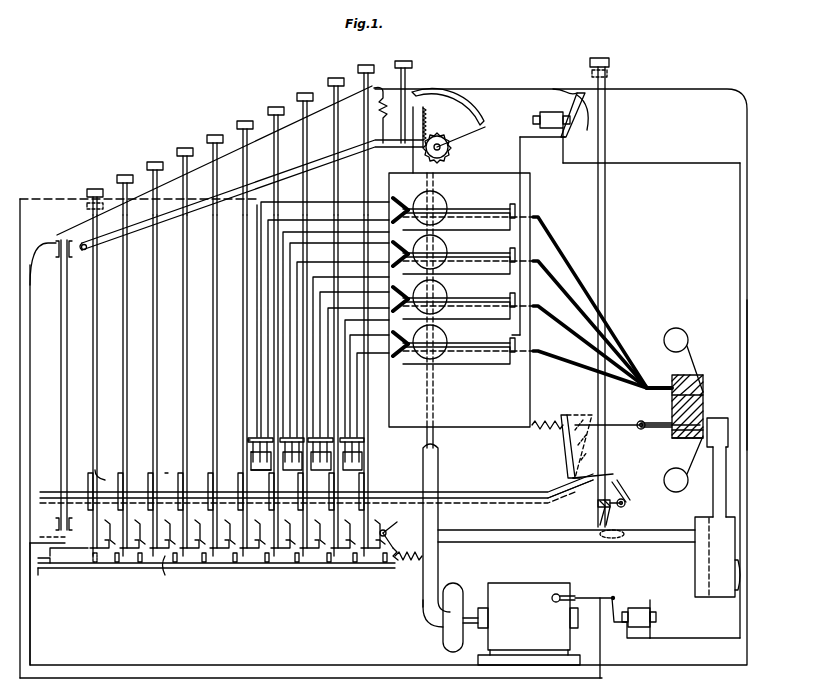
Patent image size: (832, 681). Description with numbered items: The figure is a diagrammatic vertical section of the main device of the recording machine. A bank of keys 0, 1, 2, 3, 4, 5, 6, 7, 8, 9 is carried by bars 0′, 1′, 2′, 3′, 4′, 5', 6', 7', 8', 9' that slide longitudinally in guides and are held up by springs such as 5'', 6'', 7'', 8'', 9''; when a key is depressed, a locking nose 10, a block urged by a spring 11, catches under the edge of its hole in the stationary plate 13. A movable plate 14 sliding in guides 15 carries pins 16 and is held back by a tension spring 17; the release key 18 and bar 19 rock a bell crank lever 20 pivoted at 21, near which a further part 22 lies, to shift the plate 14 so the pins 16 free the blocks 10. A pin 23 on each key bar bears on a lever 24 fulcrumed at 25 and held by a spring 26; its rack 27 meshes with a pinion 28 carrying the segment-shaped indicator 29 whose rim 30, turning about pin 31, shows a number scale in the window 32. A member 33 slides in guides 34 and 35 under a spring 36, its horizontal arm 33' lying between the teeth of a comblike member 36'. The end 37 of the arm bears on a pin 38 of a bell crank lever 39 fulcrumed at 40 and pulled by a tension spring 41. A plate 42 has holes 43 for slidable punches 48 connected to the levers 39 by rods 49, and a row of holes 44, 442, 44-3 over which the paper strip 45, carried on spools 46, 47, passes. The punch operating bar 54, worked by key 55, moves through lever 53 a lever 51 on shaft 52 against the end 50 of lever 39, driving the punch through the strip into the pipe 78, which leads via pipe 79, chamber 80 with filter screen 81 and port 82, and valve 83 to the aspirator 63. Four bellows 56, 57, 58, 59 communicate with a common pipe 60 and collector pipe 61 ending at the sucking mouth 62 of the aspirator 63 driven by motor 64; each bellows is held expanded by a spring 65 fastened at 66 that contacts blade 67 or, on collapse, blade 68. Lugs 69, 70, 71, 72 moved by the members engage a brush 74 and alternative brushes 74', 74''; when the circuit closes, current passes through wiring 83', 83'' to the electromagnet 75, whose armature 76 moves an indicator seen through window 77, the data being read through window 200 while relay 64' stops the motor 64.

The key 0 is at (94, 189).
The key 1 is at (124, 175).
The key 2 is at (154, 162).
The key 3 is at (184, 148).
The key 4 is at (214, 135).
The key 5 is at (245, 158).
The key 6 is at (276, 151).
The key 7 is at (305, 144).
The key 8 is at (336, 137).
The key 9 is at (366, 130).
The key bar 0′ is at (99, 362).
The key bar 1′ is at (129, 360).
The key bar 2′ is at (159, 360).
The key bar 3′ is at (189, 358).
The key bar 4′ is at (219, 358).
The key bar 5' is at (240, 380).
The key bar 6' is at (281, 364).
The key bar 7' is at (311, 364).
The key bar 8' is at (341, 364).
The key bar 9' is at (372, 364).
The spring 5'' is at (244, 575).
The spring 6'' is at (274, 575).
The spring 7'' is at (300, 575).
The spring 8'' is at (330, 575).
The spring 9'' is at (360, 575).
The locking nose 10 is at (163, 542).
The spring 11 is at (133, 535).
The plate 13 is at (88, 548).
The movable plate 14 is at (186, 556).
The guides 15 is at (55, 568).
The pins 16 is at (125, 553).
The tension spring 17 is at (408, 565).
The key 18 is at (403, 61).
The bar 19 is at (400, 157).
The bell crank lever 20 is at (396, 537).
The pivot 21 is at (384, 530).
The spring 22 is at (392, 563).
The pin 23 is at (150, 236).
The lever 24 is at (172, 220).
The fulcrum 25 is at (84, 254).
The spring 26 is at (383, 107).
The rack 27 is at (428, 124).
The pinion 28 is at (452, 152).
The segment-shaped indicator 29 is at (488, 128).
The curved rim 30 is at (480, 112).
The pin 31 is at (428, 155).
The window 32 is at (428, 89).
The member 33 is at (54, 385).
The horizontal arm 33' is at (172, 470).
The guide 34 is at (52, 240).
The guide 35 is at (58, 514).
The spring 36 is at (51, 529).
The clip 36' is at (126, 468).
The end of horizontal arm 37 is at (562, 482).
The pin 38 is at (570, 480).
The bell crank lever 39 is at (612, 474).
The fulcrum 40 is at (575, 476).
The tension spring 41 is at (534, 432).
The plate 42 is at (686, 375).
The holes 43 is at (688, 440).
The holes 44 is at (577, 228).
The link 442 is at (559, 318).
The link 44-3 is at (556, 355).
The paper strip 45 is at (697, 355).
The pulley 46 is at (678, 330).
The spool 47 is at (677, 483).
The punches 48 is at (678, 430).
The rods 49 is at (630, 423).
The end of arm 50 is at (616, 481).
The lever 51 is at (624, 497).
The shaft 52 is at (626, 503).
The lever 53 is at (598, 503).
The punch operating bar 54 is at (606, 228).
The key 55 is at (610, 62).
The bellows 56 is at (436, 195).
The bellows 57 is at (444, 249).
The bellows 58 is at (447, 294).
The bellows 59 is at (447, 337).
The common pipe 60 is at (436, 438).
The collector pipe 61 is at (440, 478).
The sucking mouth 62 is at (424, 607).
The aspirator 63 is at (448, 636).
The electric motor 64 is at (556, 622).
The relay 64' is at (645, 606).
The metal spring 65 is at (475, 208).
The fastening point 66 is at (509, 203).
The metal blade 67 is at (399, 218).
The second blade 68 is at (399, 199).
The lug 69 is at (258, 505).
The lug 70 is at (289, 505).
The lug 71 is at (318, 505).
The lug 72 is at (348, 505).
The brush 74 is at (235, 435).
The brush 74' is at (237, 449).
The brush 74'' is at (246, 475).
The electromagnet 75 is at (551, 129).
The armature 76 is at (580, 133).
The window 77 is at (568, 90).
The pipe 78 is at (728, 428).
The pipe 79 is at (728, 470).
The chamber 80 is at (710, 590).
The filter screen 81 is at (708, 560).
The port 82 is at (742, 576).
The valve 83 is at (423, 387).
The frame 83' is at (311, 429).
The wire 83'' is at (589, 391).
The window 200 is at (750, 374).